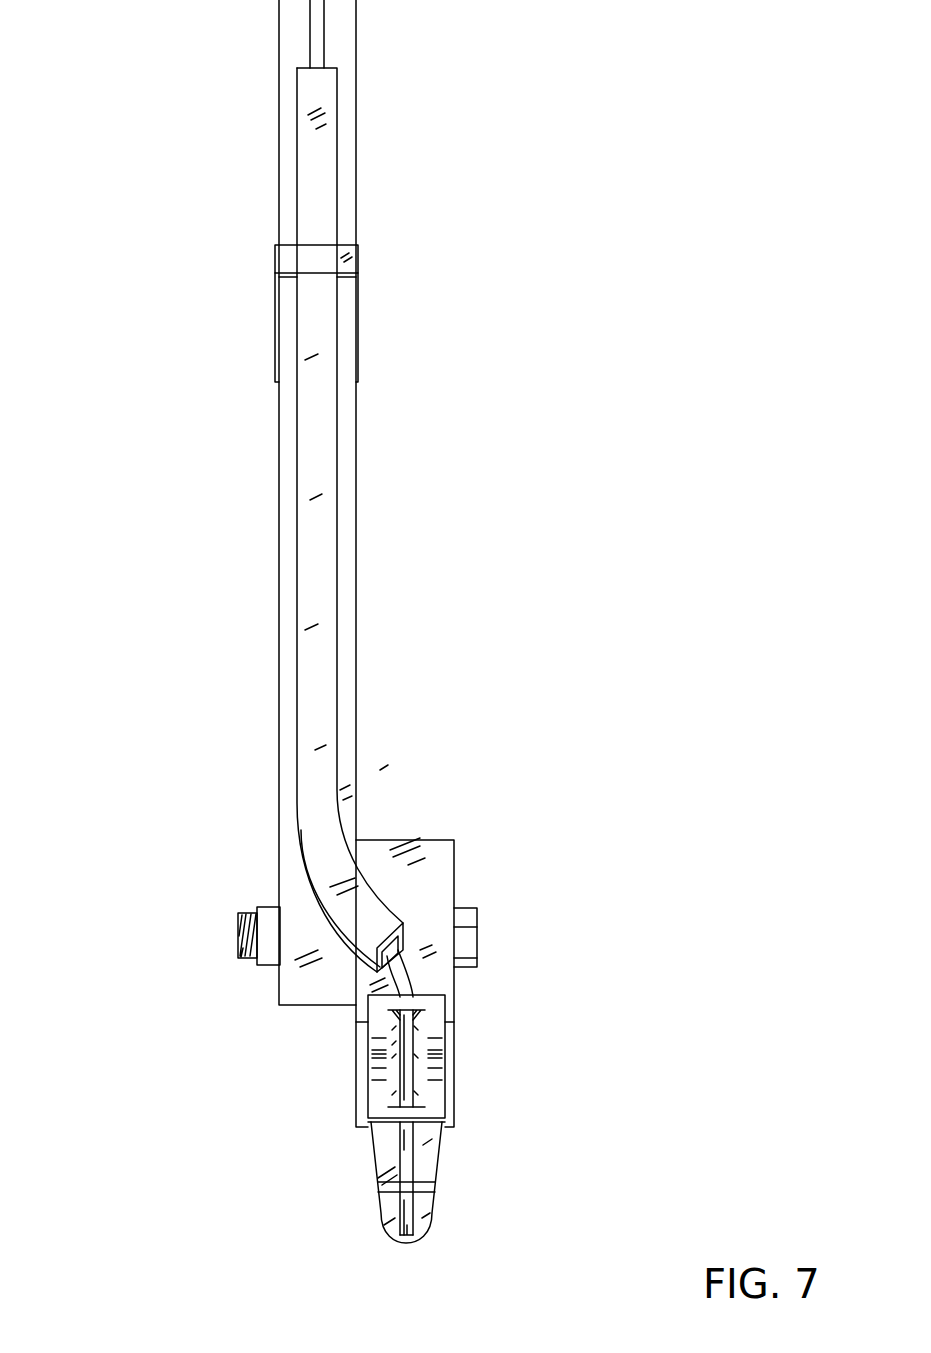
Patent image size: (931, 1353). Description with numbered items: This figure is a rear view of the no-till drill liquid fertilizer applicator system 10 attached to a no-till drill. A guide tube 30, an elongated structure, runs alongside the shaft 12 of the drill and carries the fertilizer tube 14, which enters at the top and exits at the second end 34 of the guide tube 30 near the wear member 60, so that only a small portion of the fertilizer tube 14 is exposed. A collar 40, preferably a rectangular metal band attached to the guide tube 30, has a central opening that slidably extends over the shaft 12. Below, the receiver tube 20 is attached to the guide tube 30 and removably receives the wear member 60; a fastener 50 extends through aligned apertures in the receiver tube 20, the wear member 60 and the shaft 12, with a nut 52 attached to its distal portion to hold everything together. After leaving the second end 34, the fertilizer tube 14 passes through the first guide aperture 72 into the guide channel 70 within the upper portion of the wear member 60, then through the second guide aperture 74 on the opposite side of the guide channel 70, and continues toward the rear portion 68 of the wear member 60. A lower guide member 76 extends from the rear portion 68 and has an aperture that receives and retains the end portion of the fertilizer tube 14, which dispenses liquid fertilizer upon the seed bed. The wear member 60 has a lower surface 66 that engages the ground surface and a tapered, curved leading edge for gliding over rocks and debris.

The no-till drill liquid fertilizer applicator system 10 is at (666, 222).
The shaft 12 is at (288, 578).
The fertilizer tube 14 is at (315, 38).
The receiver tube 20 is at (378, 858).
The guide tube 30 is at (320, 408).
The second end 34 is at (405, 938).
The collar 40 is at (288, 260).
The fastener 50 is at (467, 943).
The nut 52 is at (268, 925).
The wear member 60 is at (378, 1176).
The lower surface 66 is at (406, 1246).
The rear portion 68 is at (425, 1217).
The guide channel 70 is at (390, 1088).
The first guide aperture 72 is at (425, 1003).
The second guide aperture 74 is at (400, 1122).
The lower guide member 76 is at (427, 1188).